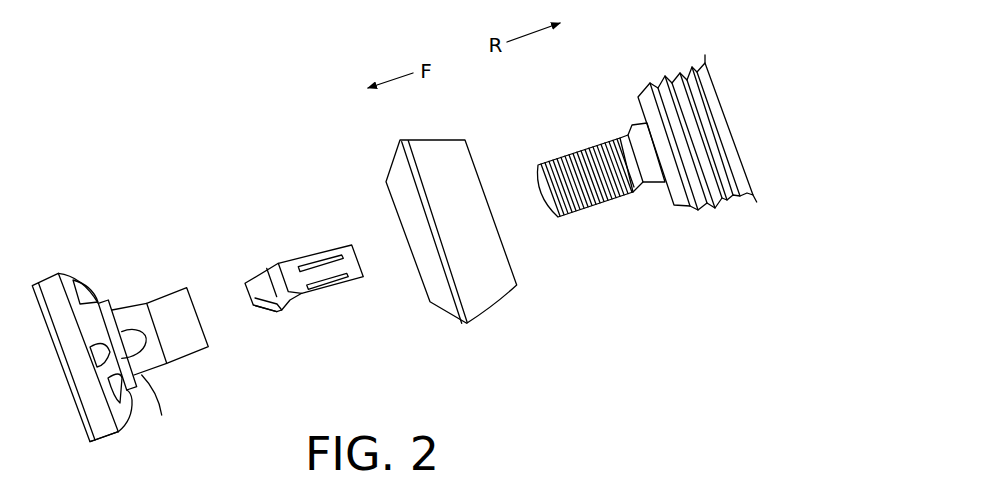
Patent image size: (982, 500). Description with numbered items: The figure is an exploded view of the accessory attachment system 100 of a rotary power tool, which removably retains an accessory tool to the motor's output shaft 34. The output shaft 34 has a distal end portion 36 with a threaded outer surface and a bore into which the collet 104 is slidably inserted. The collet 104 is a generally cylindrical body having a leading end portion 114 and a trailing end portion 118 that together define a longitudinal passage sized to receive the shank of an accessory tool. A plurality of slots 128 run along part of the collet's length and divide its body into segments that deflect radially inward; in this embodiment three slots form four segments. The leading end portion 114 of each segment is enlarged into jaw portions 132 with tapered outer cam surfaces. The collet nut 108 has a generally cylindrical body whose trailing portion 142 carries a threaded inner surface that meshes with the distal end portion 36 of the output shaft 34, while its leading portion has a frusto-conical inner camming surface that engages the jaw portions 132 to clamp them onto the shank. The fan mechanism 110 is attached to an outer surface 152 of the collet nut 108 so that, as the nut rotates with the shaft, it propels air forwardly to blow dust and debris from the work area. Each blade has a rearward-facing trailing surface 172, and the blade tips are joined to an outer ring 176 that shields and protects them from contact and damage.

The accessory attachment system 100 is at (110, 133).
The fan mechanism 110 is at (37, 268).
The collet nut 108 is at (133, 252).
The trailing surface 172 is at (97, 302).
The outer surface 152 is at (152, 374).
The trailing portion 142 is at (187, 362).
The outer ring 176 is at (107, 443).
The collet 104 is at (289, 222).
The jaw portions 132 is at (262, 292).
The slots 128 is at (315, 263).
The leading end portion 114 is at (250, 318).
The trailing end portion 118 is at (360, 286).
The output shaft 34 is at (629, 138).
The distal end portion 36 is at (624, 203).